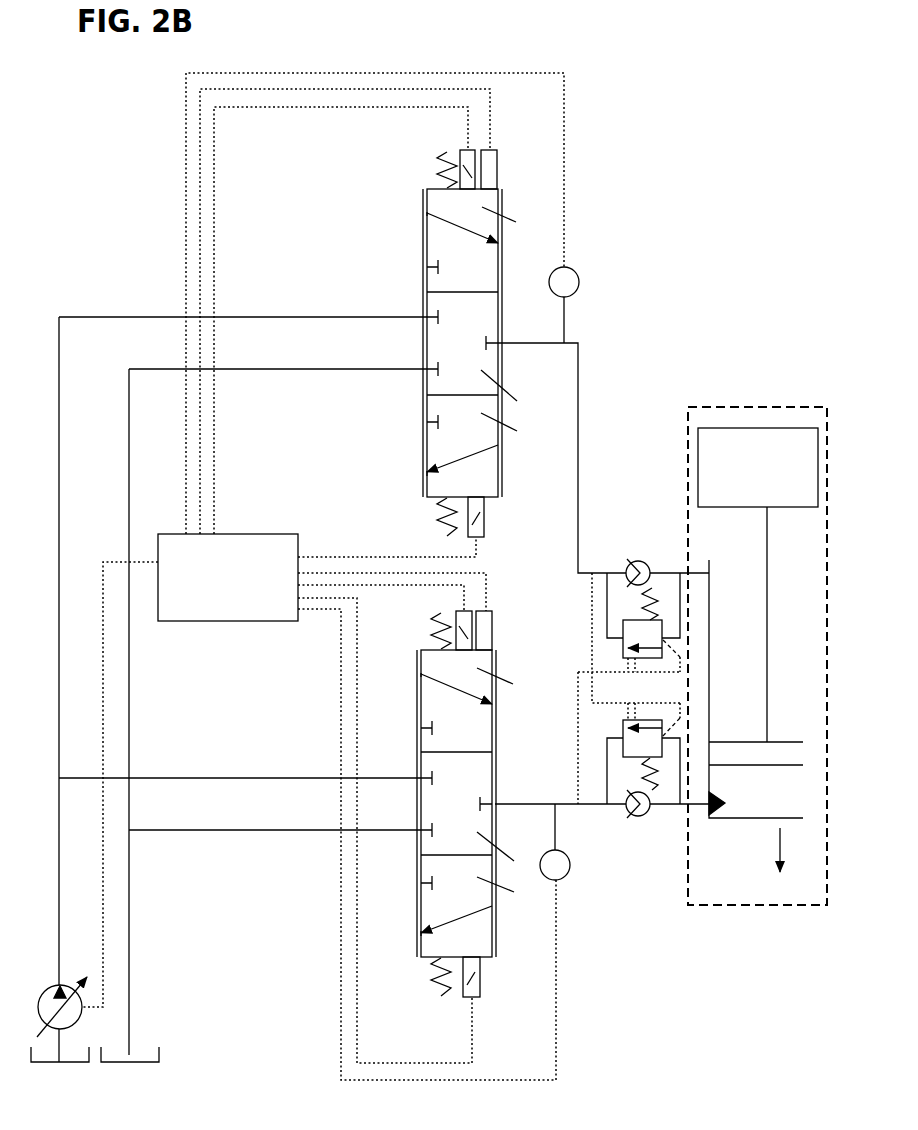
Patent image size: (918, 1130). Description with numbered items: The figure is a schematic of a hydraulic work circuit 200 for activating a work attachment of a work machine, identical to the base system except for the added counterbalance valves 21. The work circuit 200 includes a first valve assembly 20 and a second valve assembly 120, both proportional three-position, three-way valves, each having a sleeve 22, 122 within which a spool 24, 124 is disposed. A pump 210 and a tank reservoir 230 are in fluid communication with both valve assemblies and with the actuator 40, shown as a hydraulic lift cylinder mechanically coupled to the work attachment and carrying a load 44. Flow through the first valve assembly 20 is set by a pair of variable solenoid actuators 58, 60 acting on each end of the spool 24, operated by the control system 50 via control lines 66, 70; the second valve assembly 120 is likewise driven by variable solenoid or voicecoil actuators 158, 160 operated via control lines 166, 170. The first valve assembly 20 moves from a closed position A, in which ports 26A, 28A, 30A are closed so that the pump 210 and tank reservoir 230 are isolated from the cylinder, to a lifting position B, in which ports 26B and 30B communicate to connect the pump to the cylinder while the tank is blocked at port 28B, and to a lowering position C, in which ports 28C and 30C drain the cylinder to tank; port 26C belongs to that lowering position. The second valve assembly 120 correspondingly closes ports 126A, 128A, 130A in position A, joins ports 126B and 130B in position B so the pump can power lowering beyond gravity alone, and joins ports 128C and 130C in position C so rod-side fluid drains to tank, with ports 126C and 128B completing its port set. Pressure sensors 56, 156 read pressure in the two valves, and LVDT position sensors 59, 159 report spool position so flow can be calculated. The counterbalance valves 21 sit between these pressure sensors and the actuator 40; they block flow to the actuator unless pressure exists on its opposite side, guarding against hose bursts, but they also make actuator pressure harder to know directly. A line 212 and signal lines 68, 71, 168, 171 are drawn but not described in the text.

The first valve assembly 20 is at (410, 760).
The counterbalance valves 21 is at (628, 556).
The sleeve 22 is at (418, 958).
The spool 24 is at (420, 961).
The port 26A is at (418, 784).
The port 26B is at (421, 676).
The port 26C is at (419, 885).
The port 28A is at (418, 834).
The port 28B is at (421, 724).
The port 28C is at (420, 933).
The port 30A is at (497, 807).
The port 30B is at (496, 706).
The port 30C is at (494, 908).
The actuator 40 is at (732, 404).
The load 44 is at (722, 508).
The control system 50 is at (228, 577).
The pressure sensor 56 is at (566, 853).
The variable solenoid actuator 58 is at (456, 612).
The LVDT position sensor 59 is at (494, 612).
The variable solenoid actuator 60 is at (481, 998).
The control line 66 is at (409, 587).
The pressure sensor signal line 68 is at (522, 1080).
The control line 70 is at (427, 1063).
The control signal line 71 is at (489, 578).
The second valve assembly 120 is at (424, 162).
The sleeve 122 is at (424, 497).
The spool 124 is at (425, 499).
The port 126A is at (422, 322).
The port 126B is at (427, 215).
The port 126C is at (425, 424).
The port 128A is at (422, 373).
The port 128B is at (427, 262).
The port 128C is at (427, 474).
The port 130A is at (497, 345).
The port 130B is at (500, 242).
The port 130C is at (499, 447).
The pressure sensor 156 is at (574, 268).
The variable solenoid or voicecoil actuator 158 is at (461, 151).
The LVDT position sensor 159 is at (500, 150).
The variable solenoid or voicecoil actuator 160 is at (486, 530).
The control line 166 is at (336, 108).
The pressure sensor signal line 168 is at (507, 73).
The control line 170 is at (322, 557).
The control signal line 171 is at (491, 117).
The work circuit 200 is at (172, 184).
The pump 210 is at (67, 982).
The pump control line 212 is at (110, 560).
The tank reservoir 230 is at (161, 1053).